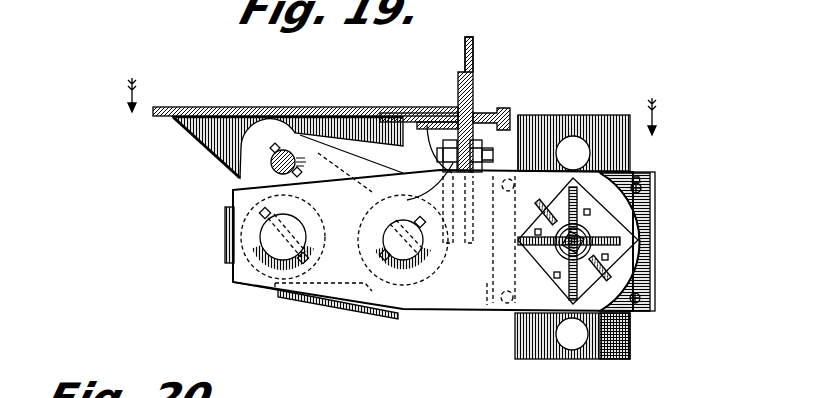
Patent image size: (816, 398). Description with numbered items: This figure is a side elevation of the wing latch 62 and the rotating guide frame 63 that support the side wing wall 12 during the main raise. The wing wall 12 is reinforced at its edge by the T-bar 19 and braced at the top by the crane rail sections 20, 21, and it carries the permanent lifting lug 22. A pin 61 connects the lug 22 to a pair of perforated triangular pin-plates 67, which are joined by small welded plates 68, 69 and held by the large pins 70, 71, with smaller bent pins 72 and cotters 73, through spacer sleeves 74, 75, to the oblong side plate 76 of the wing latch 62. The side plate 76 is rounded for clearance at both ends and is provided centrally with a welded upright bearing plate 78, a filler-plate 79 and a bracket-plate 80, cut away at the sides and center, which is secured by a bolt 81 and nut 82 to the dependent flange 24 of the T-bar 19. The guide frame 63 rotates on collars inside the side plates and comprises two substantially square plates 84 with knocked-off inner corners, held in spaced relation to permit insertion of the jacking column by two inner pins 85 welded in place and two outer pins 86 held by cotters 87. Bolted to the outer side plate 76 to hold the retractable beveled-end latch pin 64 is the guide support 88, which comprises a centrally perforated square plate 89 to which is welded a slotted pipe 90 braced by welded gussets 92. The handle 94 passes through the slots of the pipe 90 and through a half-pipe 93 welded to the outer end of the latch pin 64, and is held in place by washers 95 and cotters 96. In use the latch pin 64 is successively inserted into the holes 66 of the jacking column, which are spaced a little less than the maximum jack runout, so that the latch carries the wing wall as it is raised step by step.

The side wing wall 12 is at (473, 57).
The reinforcing T-bar 19 is at (460, 73).
The crane rail section 20 is at (170, 118).
The crane rail section 21 is at (492, 148).
The permanent lifting lug 22 is at (218, 135).
The dependent flange 24 is at (436, 155).
The pin 61 is at (273, 163).
The wing latch 62 is at (378, 292).
The rotating guide frame 63 is at (645, 246).
The retractable beveled-end latch pin 64 is at (650, 227).
The holes 66 is at (612, 335).
The perforated triangular pin-plates 67 is at (310, 135).
The small welded plate 68 is at (293, 175).
The small welded plate 69 is at (345, 283).
The large pin 70 is at (265, 248).
The large pin 71 is at (388, 224).
The bent pin 72 is at (262, 214).
The cotter 73 is at (367, 253).
The spacer sleeve 74 is at (288, 273).
The spacer sleeve 75 is at (491, 305).
The oblong side plate 76 is at (257, 284).
The upright bearing plate 78 is at (479, 239).
The filler-plate 79 is at (477, 112).
The bracket-plate 80 is at (447, 178).
The bolt 81 is at (445, 145).
The nut 82 is at (492, 152).
The square plate 84 is at (592, 140).
The inner pin 85 is at (514, 187).
The outer pin 86 is at (655, 190).
The cotter 87 is at (641, 188).
The guide support 88 is at (567, 287).
The centrally perforated square plate 89 is at (577, 347).
The pipe 90 is at (600, 198).
The welded gusset 92 is at (610, 347).
The half-pipe 93 is at (622, 168).
The handle 94 is at (591, 271).
The washer 95 is at (673, 268).
The cotter 96 is at (535, 220).